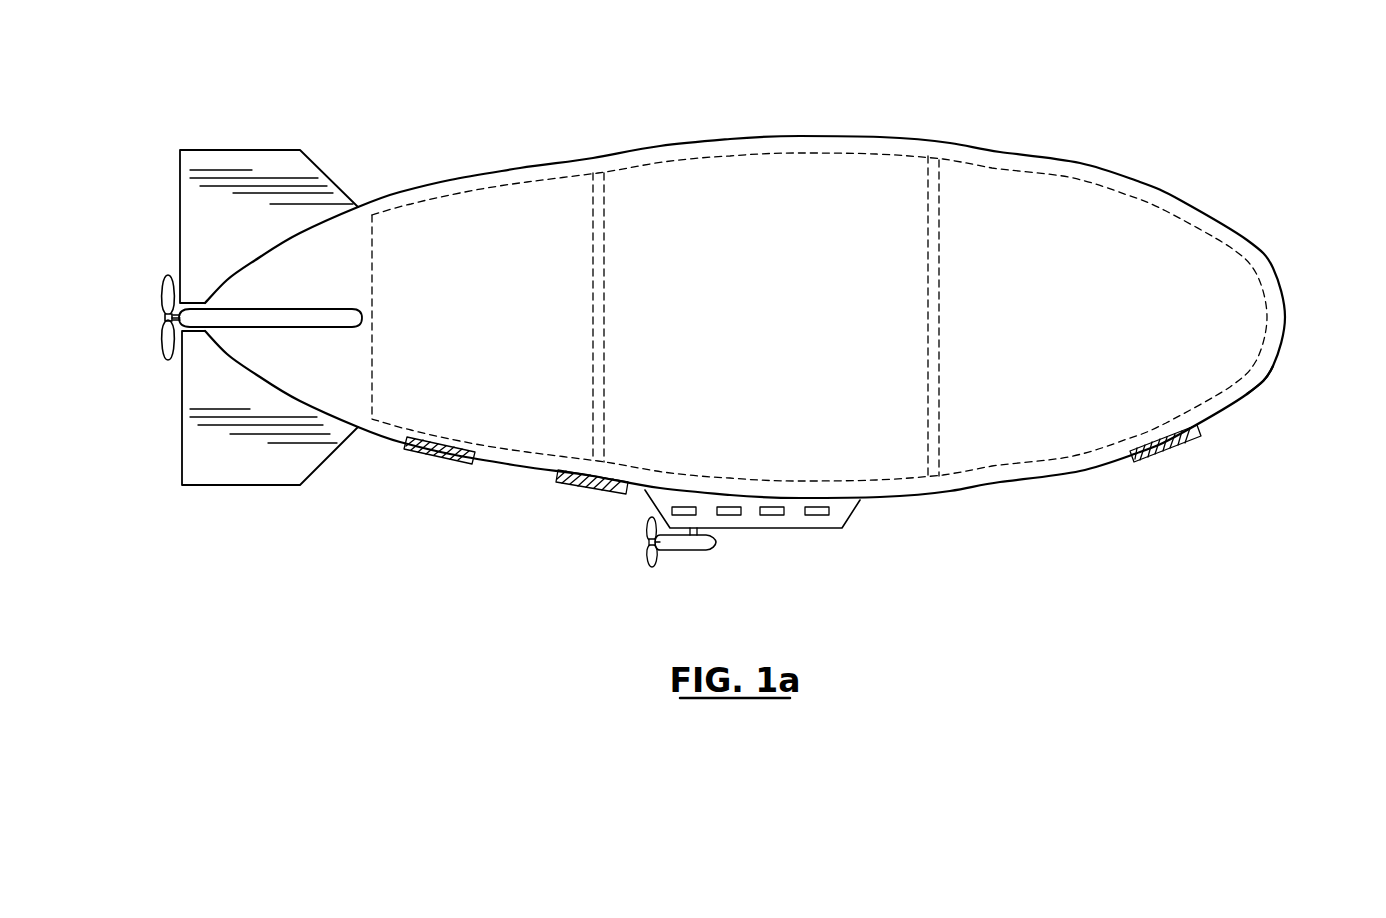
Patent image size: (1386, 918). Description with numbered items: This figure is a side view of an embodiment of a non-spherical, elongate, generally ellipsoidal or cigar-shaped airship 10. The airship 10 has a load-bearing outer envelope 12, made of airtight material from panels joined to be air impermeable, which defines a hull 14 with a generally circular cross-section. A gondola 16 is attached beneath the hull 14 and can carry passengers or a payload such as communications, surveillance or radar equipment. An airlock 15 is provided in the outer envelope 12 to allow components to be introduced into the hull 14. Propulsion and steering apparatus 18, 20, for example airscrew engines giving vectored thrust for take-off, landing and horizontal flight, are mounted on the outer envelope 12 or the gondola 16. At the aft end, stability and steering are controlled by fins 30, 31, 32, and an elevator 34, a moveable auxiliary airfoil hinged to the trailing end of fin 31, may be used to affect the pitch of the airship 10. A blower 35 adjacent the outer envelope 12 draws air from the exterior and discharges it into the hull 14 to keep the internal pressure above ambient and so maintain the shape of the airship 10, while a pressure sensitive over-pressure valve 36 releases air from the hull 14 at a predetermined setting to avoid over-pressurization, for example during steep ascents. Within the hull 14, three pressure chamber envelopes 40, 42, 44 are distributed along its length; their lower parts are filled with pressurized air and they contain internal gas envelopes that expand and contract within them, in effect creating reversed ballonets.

The airship 10 is at (1218, 139).
The load-bearing outer envelope 12 is at (1273, 268).
The hull 14 is at (1273, 393).
The airlock 15 is at (573, 491).
The gondola 16 is at (845, 528).
The propulsion and steering apparatus 18 is at (680, 550).
The propulsion and steering apparatus 20 is at (160, 290).
The fin 30 is at (340, 192).
The fin 31 is at (310, 329).
The fin 32 is at (240, 486).
The elevator 34 is at (170, 358).
The blower 35 is at (1163, 449).
The pressure sensitive valve 36 is at (447, 462).
The pressure chamber envelope 40 is at (550, 175).
The pressure chamber envelope 42 is at (852, 152).
The pressure chamber envelope 44 is at (1066, 180).